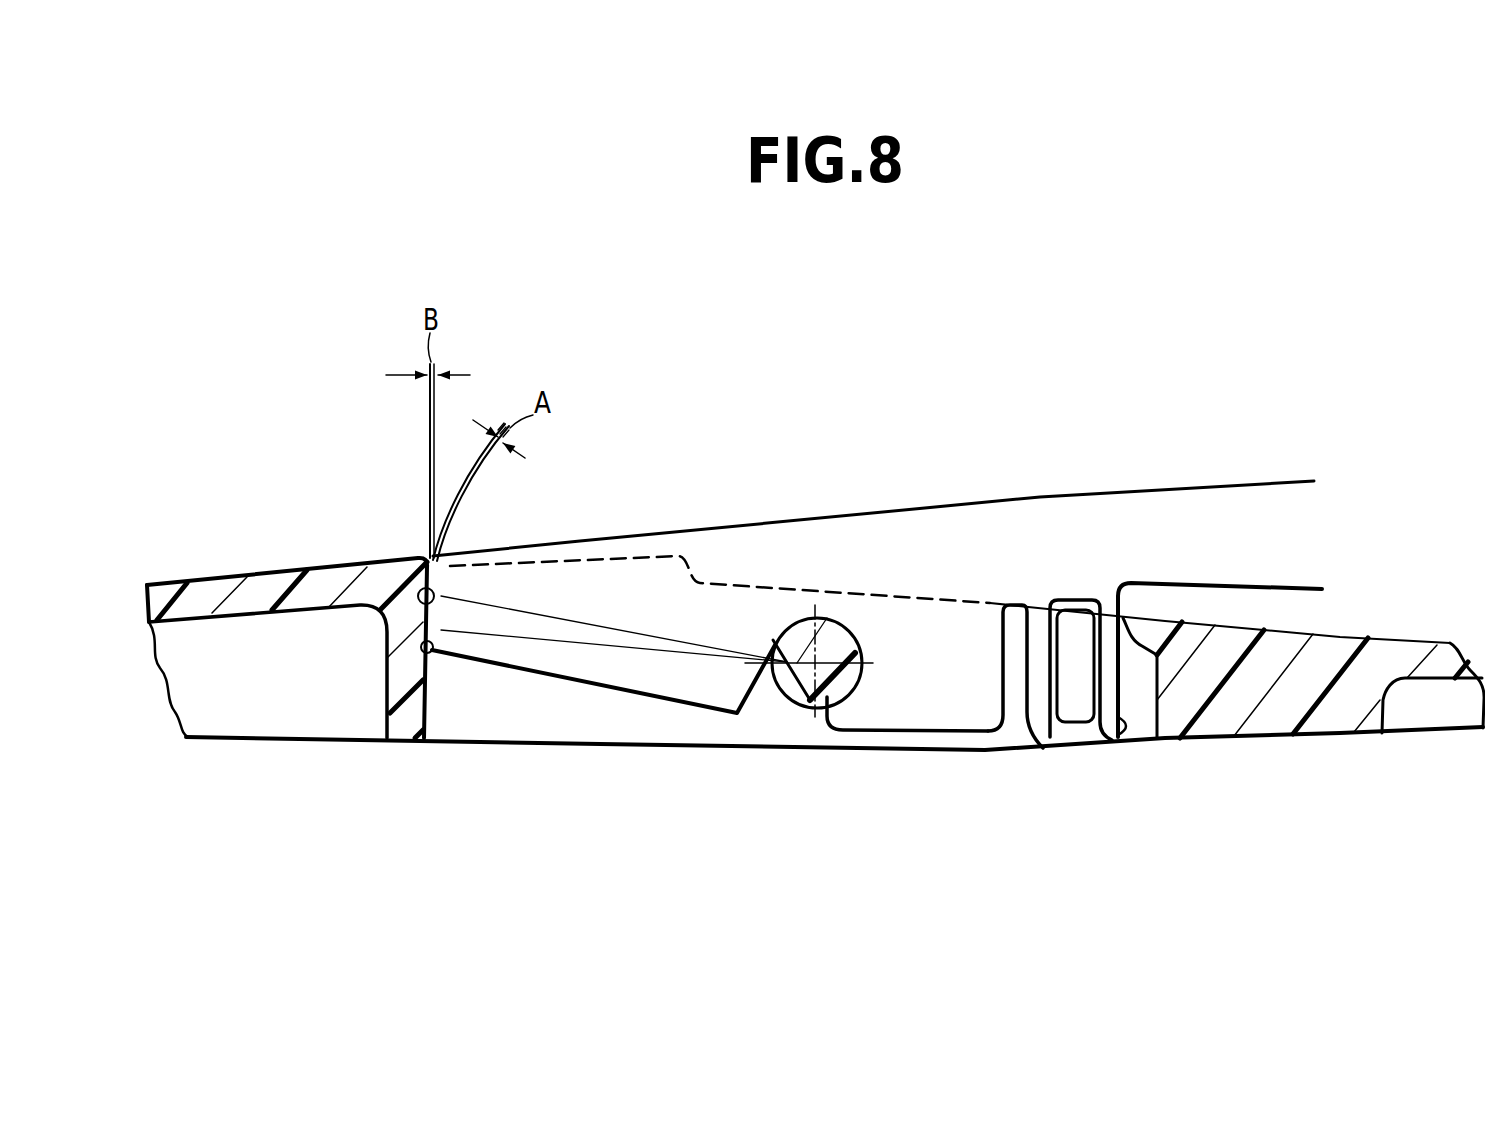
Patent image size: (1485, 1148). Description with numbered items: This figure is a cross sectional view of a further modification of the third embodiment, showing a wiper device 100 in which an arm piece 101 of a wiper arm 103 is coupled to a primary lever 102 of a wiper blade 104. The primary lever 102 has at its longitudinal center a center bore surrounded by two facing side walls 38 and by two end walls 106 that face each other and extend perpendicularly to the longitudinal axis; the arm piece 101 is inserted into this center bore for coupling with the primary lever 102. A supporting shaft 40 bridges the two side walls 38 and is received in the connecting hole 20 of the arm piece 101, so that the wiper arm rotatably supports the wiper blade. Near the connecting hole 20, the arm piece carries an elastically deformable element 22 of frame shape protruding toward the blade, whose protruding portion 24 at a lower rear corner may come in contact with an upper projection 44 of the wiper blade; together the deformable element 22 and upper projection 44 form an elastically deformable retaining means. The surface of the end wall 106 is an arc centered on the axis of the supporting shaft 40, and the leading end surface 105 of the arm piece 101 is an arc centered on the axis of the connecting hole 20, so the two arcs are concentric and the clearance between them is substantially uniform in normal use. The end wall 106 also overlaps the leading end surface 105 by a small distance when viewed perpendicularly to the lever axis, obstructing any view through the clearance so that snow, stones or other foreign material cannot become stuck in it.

The connecting hole 20 is at (845, 622).
The elastically deformable element 22 is at (1064, 740).
The protruding portion 24 is at (1117, 725).
The side walls 38 is at (538, 713).
The supporting shaft 40 is at (820, 713).
The upper projection 44 is at (1138, 625).
The wiper device 100 is at (857, 393).
The arm piece 101 is at (1195, 490).
The primary lever 102 is at (273, 583).
The wiper arm 103 is at (1303, 678).
The wiper blade 104 is at (286, 671).
The leading end surface 105 is at (441, 597).
The end wall 106 is at (425, 654).